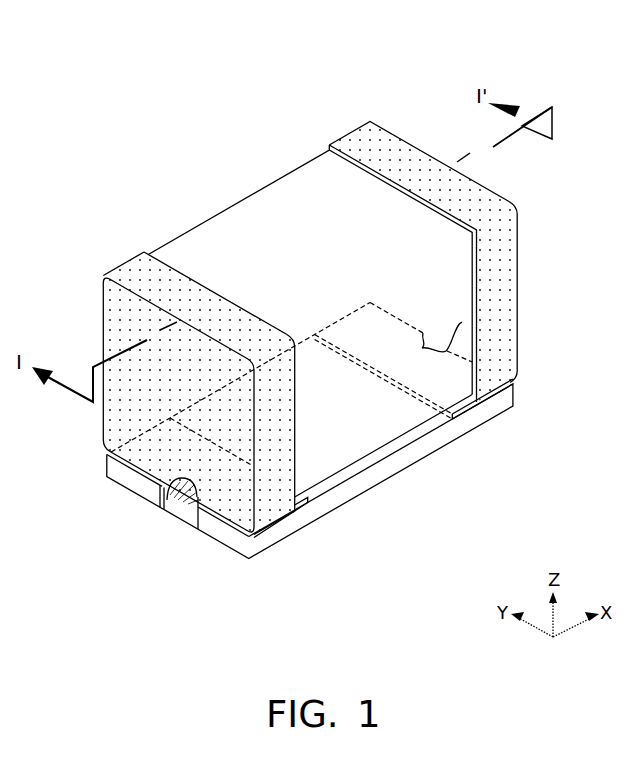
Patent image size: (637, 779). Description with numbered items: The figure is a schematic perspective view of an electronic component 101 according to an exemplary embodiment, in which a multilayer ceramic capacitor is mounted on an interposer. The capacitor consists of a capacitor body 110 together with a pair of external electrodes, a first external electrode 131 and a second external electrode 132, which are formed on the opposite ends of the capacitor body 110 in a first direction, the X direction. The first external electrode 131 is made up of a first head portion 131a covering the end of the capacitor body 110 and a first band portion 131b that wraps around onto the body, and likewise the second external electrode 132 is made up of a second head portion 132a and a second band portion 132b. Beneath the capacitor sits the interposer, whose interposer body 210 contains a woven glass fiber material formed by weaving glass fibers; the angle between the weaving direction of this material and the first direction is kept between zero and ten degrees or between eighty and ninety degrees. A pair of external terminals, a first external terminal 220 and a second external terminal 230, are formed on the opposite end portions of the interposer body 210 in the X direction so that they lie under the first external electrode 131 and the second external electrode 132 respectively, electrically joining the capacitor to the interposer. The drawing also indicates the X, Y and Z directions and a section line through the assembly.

The electronic component 101 is at (150, 89).
The capacitor body 110 is at (248, 230).
The first external electrode 131 is at (100, 190).
The first head portion 131a is at (118, 315).
The first band portion 131b is at (132, 264).
The second external electrode 132 is at (381, 28).
The second head portion 132a is at (410, 134).
The second band portion 132b is at (361, 144).
The interposer body 210 is at (393, 470).
The first external terminal 220 is at (178, 511).
The second external terminal 230 is at (462, 322).